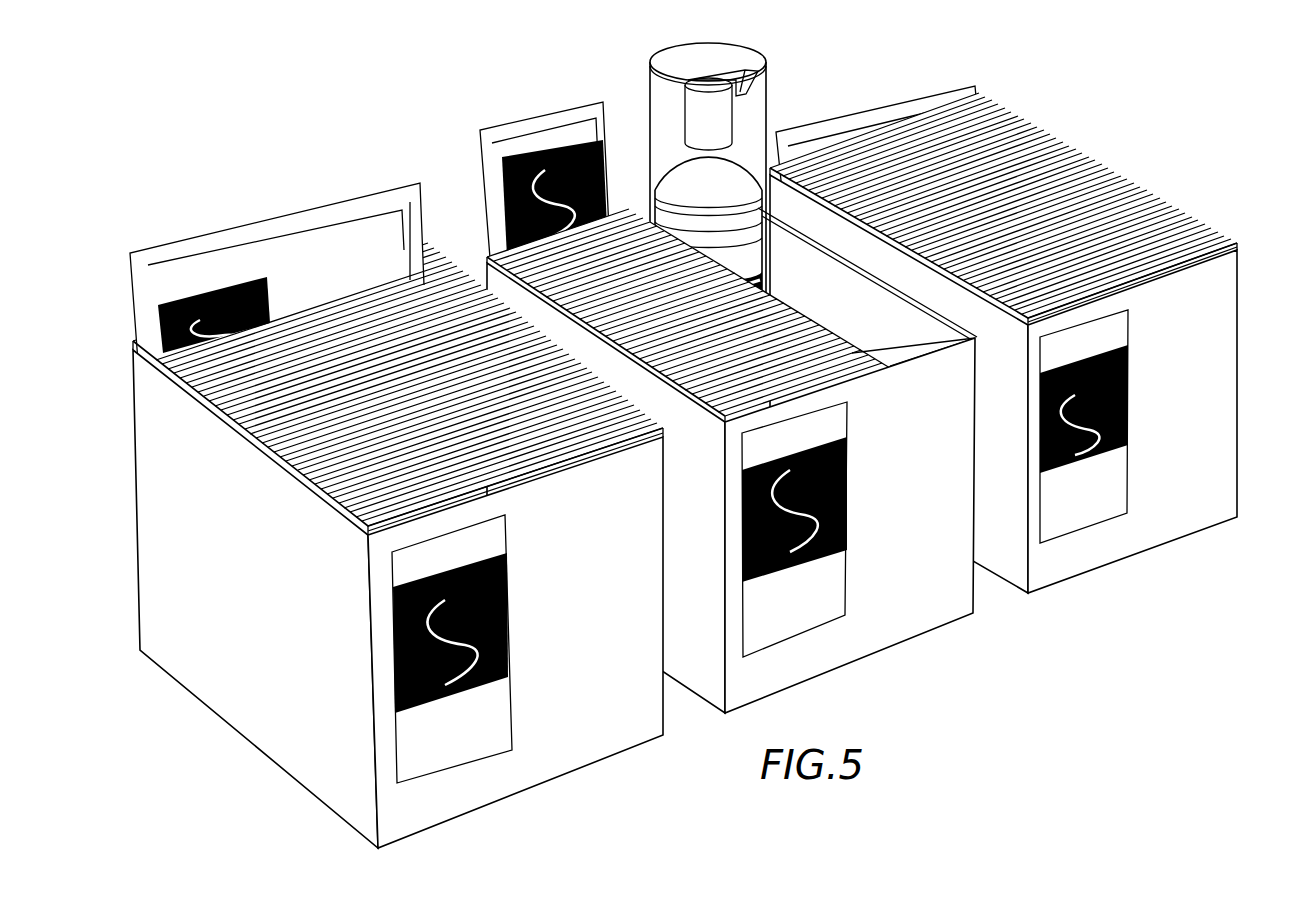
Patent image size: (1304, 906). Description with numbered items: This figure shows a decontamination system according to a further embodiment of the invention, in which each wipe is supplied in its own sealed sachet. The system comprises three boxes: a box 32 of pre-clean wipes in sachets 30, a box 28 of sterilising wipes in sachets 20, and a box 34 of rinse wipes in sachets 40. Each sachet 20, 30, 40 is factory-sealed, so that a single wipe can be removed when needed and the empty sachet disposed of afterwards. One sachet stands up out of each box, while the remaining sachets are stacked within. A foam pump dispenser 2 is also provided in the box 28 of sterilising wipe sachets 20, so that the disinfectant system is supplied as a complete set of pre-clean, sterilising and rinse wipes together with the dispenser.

The foam pump dispenser 2 is at (779, 87).
The sealed container 20 is at (492, 130).
The box of sterilising wipes 28 is at (729, 369).
The sachet of pre-clean wipe 30 is at (300, 228).
The box of pre-clean wipes 32 is at (396, 485).
The box of rinse wipes 34 is at (1032, 301).
The sachet of rinse wipe 40 is at (940, 102).